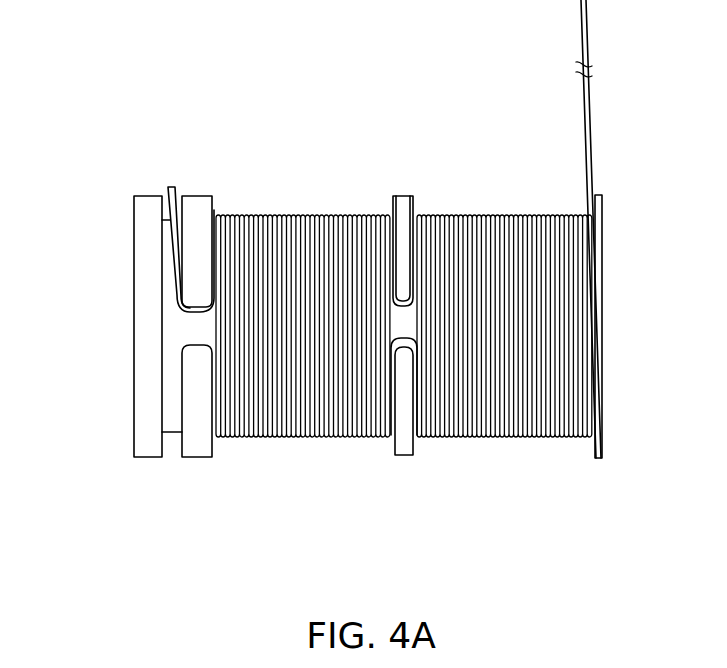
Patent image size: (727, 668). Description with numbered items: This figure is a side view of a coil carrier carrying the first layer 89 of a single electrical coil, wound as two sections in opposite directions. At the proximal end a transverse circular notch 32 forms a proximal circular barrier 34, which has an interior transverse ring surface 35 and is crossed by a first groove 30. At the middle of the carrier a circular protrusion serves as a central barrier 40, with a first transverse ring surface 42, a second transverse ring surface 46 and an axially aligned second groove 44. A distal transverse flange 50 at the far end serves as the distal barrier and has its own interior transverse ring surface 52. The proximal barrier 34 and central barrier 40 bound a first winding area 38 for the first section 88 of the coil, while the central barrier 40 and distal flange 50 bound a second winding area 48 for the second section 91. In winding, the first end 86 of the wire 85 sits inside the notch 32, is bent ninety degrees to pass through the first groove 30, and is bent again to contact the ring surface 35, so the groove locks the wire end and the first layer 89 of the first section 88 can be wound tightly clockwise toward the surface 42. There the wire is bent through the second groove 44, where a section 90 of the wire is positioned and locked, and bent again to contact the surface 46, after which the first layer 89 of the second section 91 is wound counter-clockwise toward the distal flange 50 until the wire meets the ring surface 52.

The first groove 30 is at (197, 327).
The transverse circular notch 32 is at (172, 448).
The proximal circular barrier 34 is at (197, 206).
The interior transverse ring surface 35 is at (215, 212).
The first winding area 38 is at (280, 203).
The central barrier 40 is at (405, 200).
The first transverse ring surface 42 is at (393, 200).
The second groove 44 is at (403, 322).
The second transverse ring surface 46 is at (417, 208).
The second winding area 48 is at (535, 203).
The distal transverse flange 50 is at (599, 458).
The interior transverse ring surface 52 is at (592, 445).
The wire 85 is at (177, 238).
The first end 86 is at (173, 188).
The first section 88 is at (261, 457).
The first layer 89 is at (337, 216).
The section of the wire 90 is at (402, 343).
The second section 91 is at (445, 457).